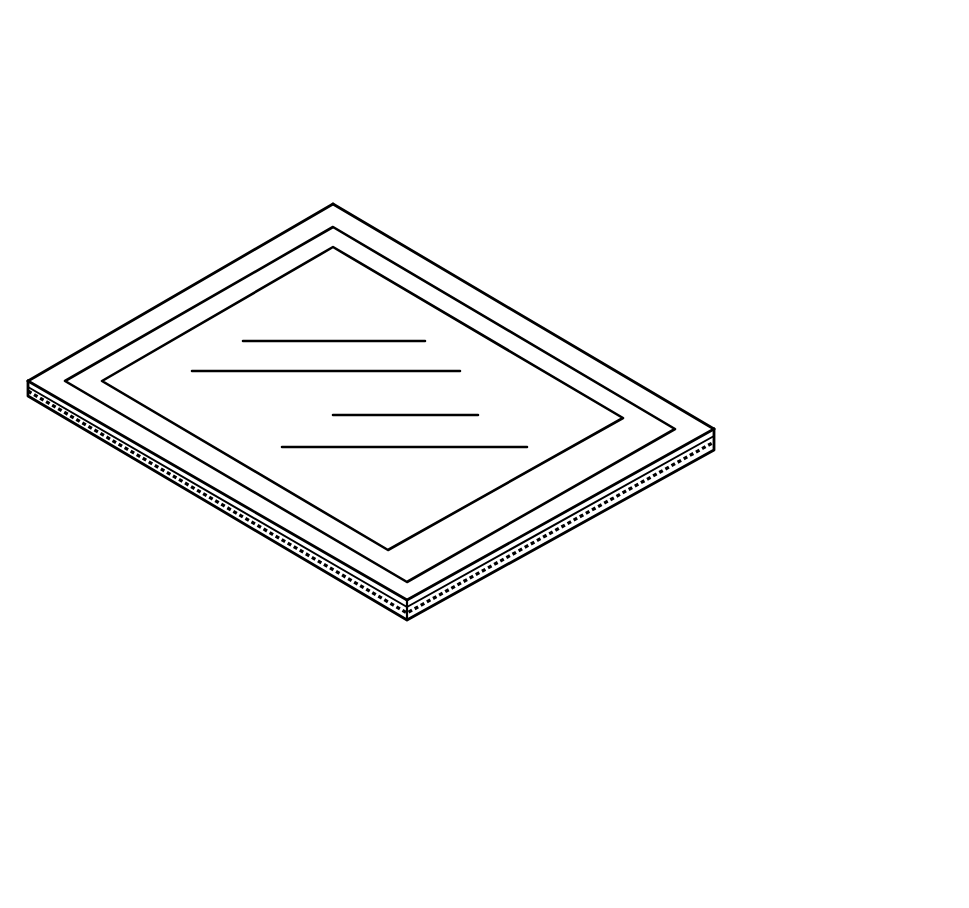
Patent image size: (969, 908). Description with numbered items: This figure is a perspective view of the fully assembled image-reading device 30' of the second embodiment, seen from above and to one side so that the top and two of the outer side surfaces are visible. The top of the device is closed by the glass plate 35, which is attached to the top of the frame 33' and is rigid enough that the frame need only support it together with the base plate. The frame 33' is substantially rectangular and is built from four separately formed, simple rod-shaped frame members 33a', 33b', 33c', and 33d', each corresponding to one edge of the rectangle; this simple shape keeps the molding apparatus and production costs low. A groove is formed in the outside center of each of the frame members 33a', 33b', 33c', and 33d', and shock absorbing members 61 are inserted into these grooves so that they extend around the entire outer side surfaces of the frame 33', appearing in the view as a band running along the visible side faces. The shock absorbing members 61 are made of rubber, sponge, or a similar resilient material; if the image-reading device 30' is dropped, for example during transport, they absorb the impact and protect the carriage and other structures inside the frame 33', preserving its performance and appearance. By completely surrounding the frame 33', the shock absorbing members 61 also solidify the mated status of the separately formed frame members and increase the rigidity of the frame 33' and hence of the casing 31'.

The image-reading device 30' is at (417, 450).
The casing 31' is at (371, 435).
The frame 33' is at (371, 414).
The frame member 33a' is at (523, 312).
The frame member 33b' is at (217, 497).
The frame member 33c' is at (560, 556).
The frame member 33d' is at (180, 263).
The glass plate 35 is at (378, 293).
The shock absorbing member 61 is at (690, 456).